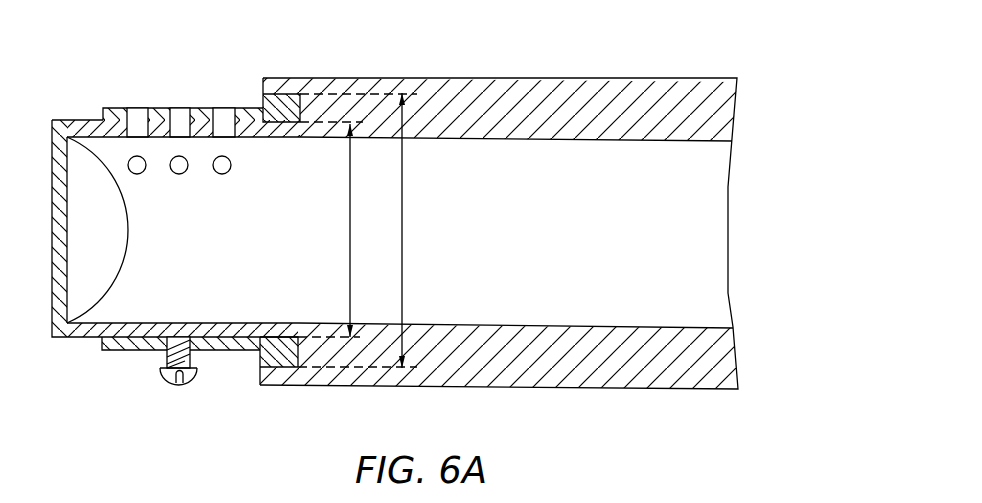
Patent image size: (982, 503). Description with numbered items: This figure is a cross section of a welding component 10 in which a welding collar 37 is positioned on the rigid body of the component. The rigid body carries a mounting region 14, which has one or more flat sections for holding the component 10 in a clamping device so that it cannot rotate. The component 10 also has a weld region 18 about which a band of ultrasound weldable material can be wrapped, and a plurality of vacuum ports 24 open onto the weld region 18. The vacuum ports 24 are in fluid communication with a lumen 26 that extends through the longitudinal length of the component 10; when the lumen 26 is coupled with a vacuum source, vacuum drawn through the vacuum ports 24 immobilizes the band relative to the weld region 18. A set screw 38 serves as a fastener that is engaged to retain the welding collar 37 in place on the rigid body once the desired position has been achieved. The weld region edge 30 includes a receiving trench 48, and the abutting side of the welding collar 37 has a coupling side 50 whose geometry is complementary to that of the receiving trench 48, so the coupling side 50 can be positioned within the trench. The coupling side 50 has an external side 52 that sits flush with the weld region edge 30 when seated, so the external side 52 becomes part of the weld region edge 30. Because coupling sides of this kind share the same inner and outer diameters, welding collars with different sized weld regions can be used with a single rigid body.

The welding component 10 is at (453, 53).
The mounting region 14 is at (77, 337).
The weld region 18 is at (205, 352).
The vacuum ports 24 is at (178, 103).
The lumen 26 is at (707, 217).
The weld region edge 30 is at (170, 207).
The welding collar 37 is at (110, 108).
The set screw 38 is at (172, 385).
The receiving trench 48 is at (283, 94).
The coupling side 50 is at (278, 123).
The external side 52 is at (260, 363).